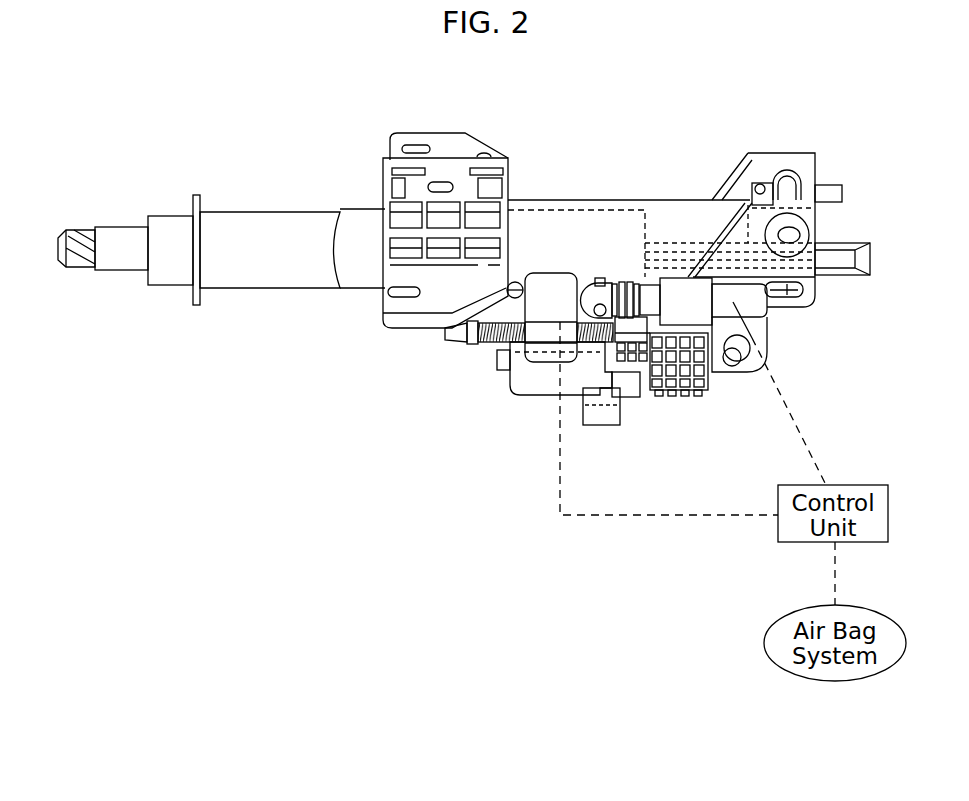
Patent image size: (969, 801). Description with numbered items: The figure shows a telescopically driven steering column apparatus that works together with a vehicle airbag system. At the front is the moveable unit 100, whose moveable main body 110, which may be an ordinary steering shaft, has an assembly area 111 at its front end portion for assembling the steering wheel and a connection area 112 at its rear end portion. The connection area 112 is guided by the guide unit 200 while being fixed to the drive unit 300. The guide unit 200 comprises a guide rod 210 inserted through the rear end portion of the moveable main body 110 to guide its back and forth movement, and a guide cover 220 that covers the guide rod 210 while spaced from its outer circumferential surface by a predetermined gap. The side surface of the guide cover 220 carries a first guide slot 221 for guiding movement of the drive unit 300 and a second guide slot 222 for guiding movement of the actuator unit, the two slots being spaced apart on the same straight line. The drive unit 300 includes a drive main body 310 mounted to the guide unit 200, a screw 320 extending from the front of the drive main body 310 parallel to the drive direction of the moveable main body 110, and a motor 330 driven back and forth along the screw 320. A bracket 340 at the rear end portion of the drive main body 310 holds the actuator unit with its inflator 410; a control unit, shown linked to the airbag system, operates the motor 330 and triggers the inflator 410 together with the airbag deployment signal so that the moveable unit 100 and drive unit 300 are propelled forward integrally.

The moveable unit 100 is at (301, 204).
The moveable main body 110 is at (445, 230).
The assembly area 111 is at (75, 233).
The connection area 112 is at (592, 210).
The guide unit 200 is at (508, 351).
The guide rod 210 is at (766, 186).
The guide cover 220 is at (709, 218).
The first guide slot 221 is at (518, 278).
The second guide slot 222 is at (803, 291).
The drive unit 300 is at (417, 461).
The drive main body 310 is at (663, 390).
The screw 320 is at (485, 346).
The motor 330 is at (532, 308).
The bracket 340 is at (682, 309).
The inflator 410 is at (757, 308).